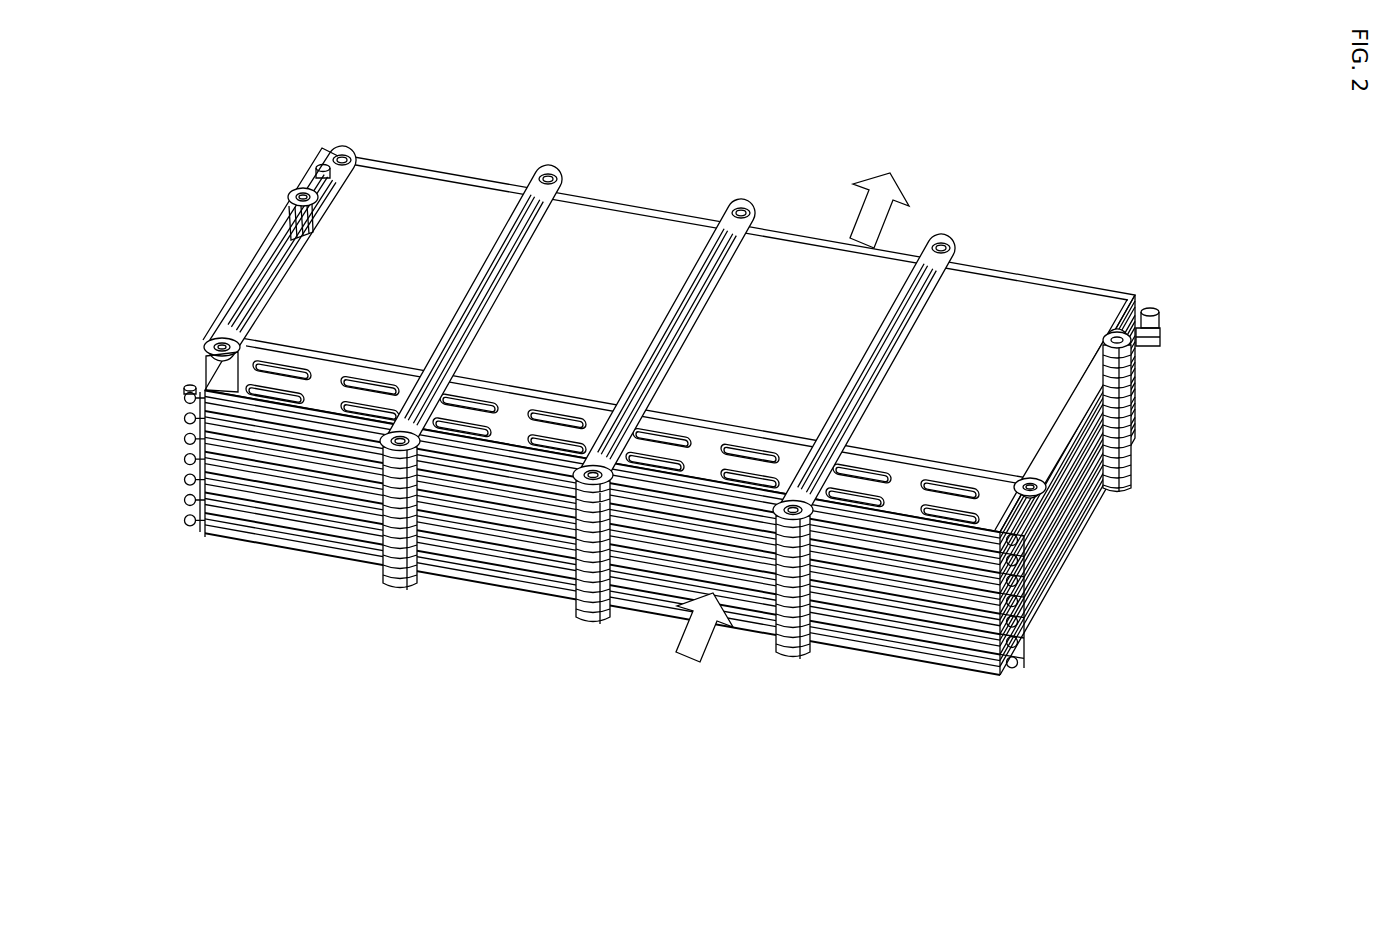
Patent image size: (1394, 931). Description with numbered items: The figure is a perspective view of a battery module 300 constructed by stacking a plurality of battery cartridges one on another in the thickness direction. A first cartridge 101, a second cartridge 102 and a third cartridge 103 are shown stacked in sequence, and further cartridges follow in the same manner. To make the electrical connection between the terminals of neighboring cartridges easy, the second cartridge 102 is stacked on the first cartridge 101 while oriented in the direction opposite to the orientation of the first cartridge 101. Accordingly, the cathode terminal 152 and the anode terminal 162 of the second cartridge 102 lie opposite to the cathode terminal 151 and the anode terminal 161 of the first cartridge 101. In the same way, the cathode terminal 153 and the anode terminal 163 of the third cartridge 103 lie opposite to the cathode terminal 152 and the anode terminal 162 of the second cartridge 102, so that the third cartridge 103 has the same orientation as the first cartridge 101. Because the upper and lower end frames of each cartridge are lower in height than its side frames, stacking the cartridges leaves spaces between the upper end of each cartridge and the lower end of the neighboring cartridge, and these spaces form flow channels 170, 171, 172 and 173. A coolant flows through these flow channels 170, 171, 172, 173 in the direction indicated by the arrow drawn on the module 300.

The battery module 300 is at (722, 137).
The first cartridge 101 is at (950, 660).
The second cartridge 102 is at (1160, 325).
The third cartridge 103 is at (183, 436).
The cathode terminal 151 is at (1082, 535).
The cathode terminal 152 is at (323, 160).
The cathode terminal 153 is at (183, 424).
The anode terminal 161 is at (183, 400).
The anode terminal 162 is at (1155, 305).
The anode terminal 163 is at (1068, 565).
The flow channel 170 is at (838, 640).
The flow channel 171 is at (650, 612).
The flow channel 172 is at (500, 580).
The flow channel 173 is at (310, 545).